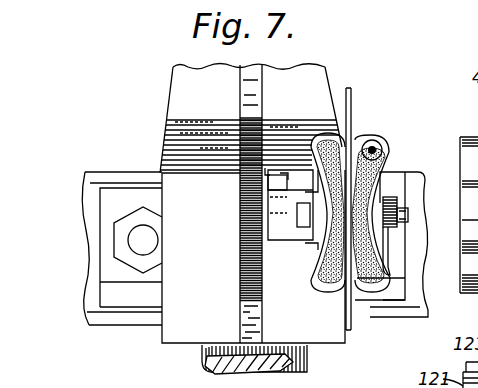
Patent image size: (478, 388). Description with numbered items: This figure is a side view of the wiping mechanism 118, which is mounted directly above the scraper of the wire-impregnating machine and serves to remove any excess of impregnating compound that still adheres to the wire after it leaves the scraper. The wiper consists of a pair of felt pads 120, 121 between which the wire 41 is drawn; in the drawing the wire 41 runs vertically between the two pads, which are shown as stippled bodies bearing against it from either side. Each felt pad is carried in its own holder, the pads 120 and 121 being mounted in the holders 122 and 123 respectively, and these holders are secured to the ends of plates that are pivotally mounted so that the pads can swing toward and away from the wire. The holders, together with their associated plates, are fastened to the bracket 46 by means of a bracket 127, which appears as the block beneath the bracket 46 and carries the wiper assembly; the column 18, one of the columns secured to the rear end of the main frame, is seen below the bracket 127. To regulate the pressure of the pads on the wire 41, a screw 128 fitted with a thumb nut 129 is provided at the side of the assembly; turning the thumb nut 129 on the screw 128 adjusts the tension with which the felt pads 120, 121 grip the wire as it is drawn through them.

The column 18 is at (205, 351).
The wire 41 is at (351, 104).
The bracket 46 is at (180, 111).
The wiping mechanism 118 is at (328, 232).
The felt pad 120 is at (373, 141).
The felt pad 121 is at (323, 140).
The holder 122 is at (381, 158).
The holder 123 is at (320, 157).
The bracket 127 is at (283, 229).
The screw 128 is at (402, 211).
The thumb nut 129 is at (398, 221).